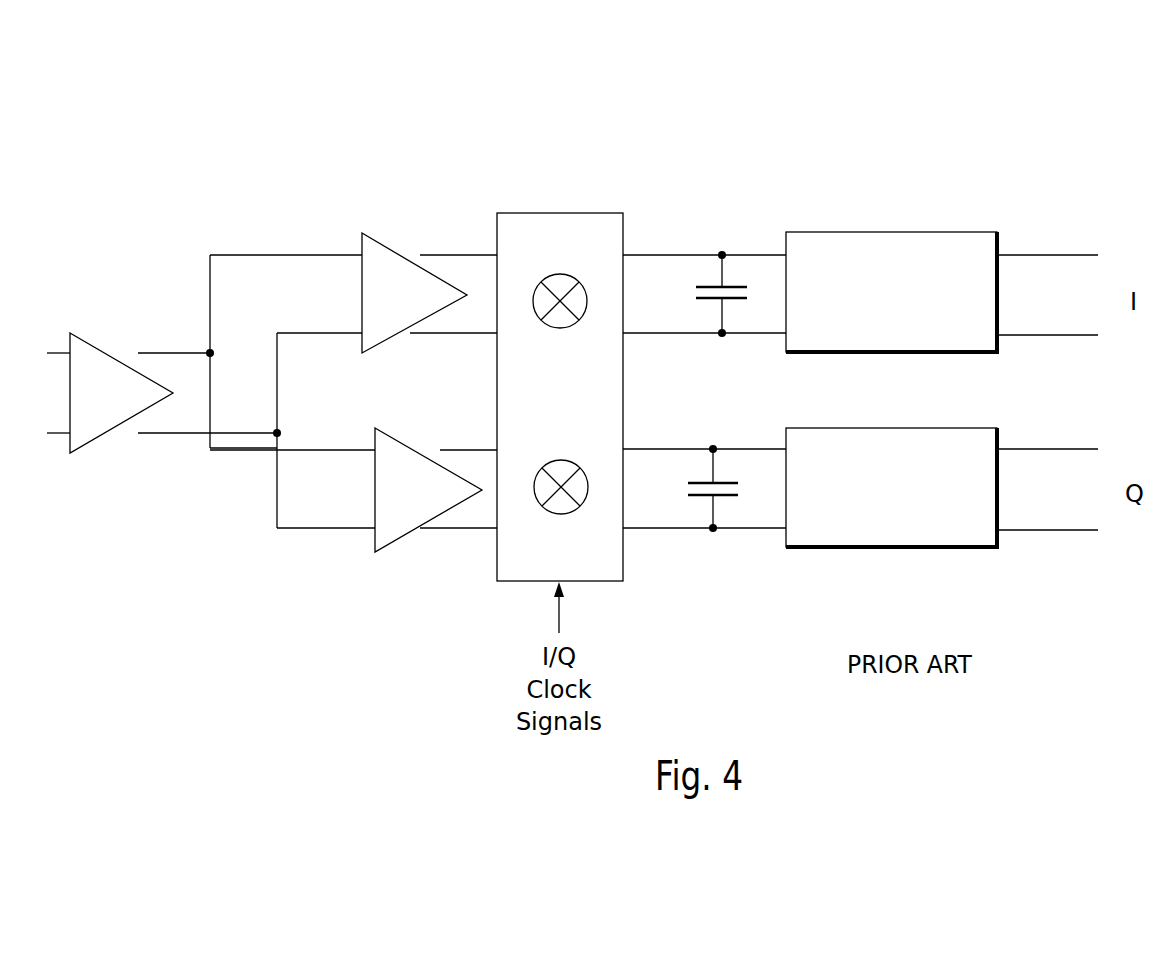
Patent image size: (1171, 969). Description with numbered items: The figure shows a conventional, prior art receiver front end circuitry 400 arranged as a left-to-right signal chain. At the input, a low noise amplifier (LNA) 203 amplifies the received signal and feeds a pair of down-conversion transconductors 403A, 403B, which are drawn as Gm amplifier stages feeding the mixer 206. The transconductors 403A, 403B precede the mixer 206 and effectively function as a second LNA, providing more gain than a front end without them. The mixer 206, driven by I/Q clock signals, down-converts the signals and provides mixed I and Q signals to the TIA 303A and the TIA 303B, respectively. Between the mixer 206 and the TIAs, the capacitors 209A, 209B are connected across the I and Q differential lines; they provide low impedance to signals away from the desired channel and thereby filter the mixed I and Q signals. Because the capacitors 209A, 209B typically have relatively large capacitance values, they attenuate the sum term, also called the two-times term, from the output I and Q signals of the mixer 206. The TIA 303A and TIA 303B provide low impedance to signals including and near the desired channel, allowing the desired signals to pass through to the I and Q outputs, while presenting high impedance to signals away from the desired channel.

The conventional front end circuitry 400 is at (766, 134).
The low noise amplifier (LNA) 203 is at (68, 443).
The down-conversion transconductor 403A is at (360, 245).
The down-conversion transconductor 403B is at (373, 440).
The mixer 206 is at (546, 212).
The capacitor 209A is at (710, 286).
The capacitor 209B is at (706, 482).
The TIA 303A is at (892, 231).
The TIA 303B is at (891, 549).